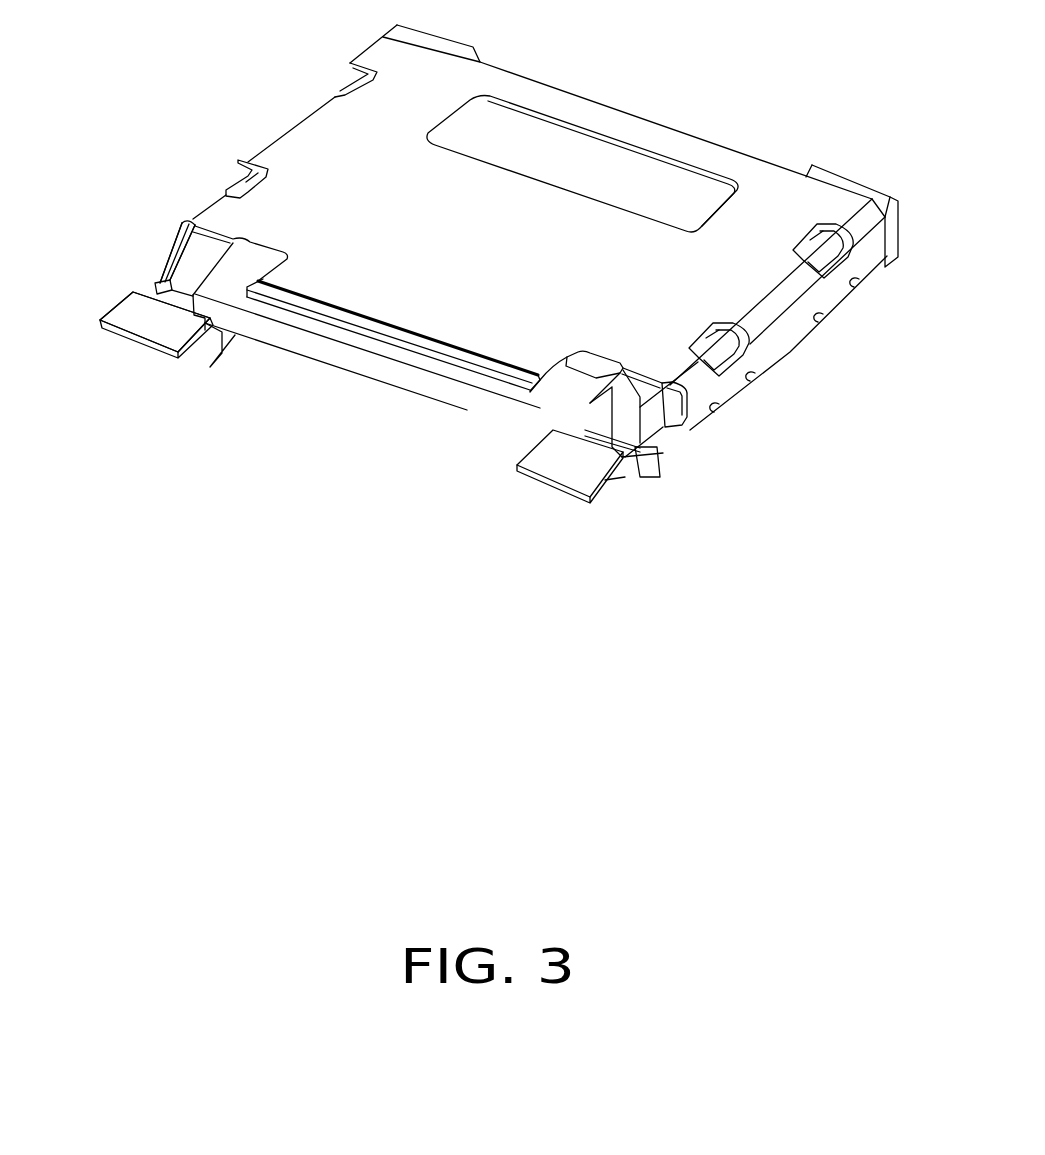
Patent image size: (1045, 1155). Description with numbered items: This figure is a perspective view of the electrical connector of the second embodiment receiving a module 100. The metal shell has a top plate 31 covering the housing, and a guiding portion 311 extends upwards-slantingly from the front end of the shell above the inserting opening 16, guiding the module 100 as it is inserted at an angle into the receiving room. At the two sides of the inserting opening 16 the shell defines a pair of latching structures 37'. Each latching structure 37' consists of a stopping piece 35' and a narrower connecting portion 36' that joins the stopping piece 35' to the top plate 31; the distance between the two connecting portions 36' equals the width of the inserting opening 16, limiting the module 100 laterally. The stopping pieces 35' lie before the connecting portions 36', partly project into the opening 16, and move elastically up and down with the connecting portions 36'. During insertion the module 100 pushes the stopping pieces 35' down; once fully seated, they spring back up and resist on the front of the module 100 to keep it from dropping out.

The top plate 31 is at (616, 128).
The guiding portion 311 is at (452, 348).
The inserting opening 16 is at (542, 395).
The module 100 is at (328, 352).
The stopping piece 35' is at (129, 318).
The connecting portion 36' is at (157, 242).
The latching structure 37' is at (121, 268).